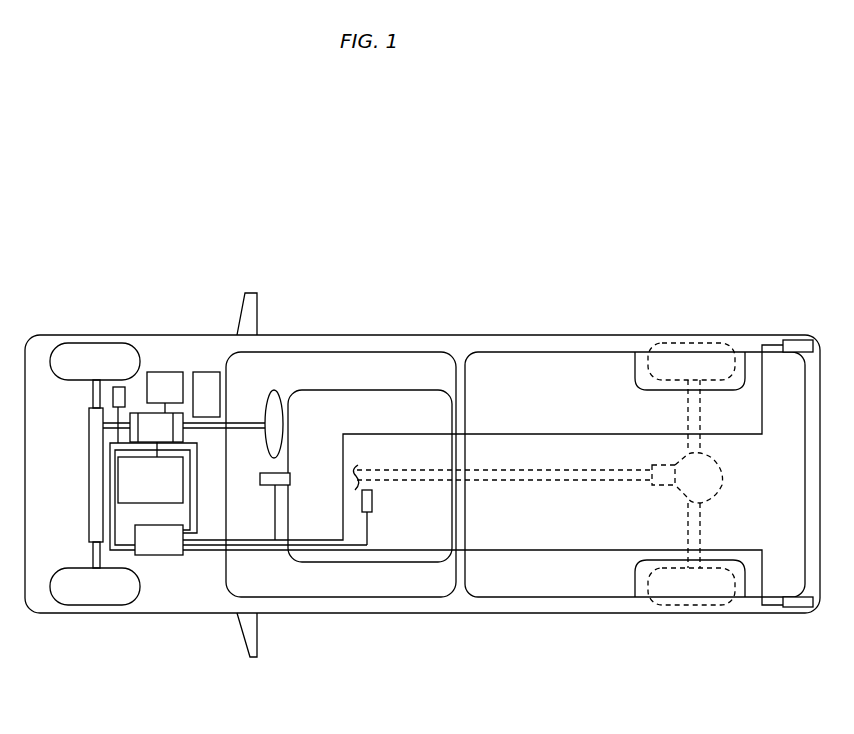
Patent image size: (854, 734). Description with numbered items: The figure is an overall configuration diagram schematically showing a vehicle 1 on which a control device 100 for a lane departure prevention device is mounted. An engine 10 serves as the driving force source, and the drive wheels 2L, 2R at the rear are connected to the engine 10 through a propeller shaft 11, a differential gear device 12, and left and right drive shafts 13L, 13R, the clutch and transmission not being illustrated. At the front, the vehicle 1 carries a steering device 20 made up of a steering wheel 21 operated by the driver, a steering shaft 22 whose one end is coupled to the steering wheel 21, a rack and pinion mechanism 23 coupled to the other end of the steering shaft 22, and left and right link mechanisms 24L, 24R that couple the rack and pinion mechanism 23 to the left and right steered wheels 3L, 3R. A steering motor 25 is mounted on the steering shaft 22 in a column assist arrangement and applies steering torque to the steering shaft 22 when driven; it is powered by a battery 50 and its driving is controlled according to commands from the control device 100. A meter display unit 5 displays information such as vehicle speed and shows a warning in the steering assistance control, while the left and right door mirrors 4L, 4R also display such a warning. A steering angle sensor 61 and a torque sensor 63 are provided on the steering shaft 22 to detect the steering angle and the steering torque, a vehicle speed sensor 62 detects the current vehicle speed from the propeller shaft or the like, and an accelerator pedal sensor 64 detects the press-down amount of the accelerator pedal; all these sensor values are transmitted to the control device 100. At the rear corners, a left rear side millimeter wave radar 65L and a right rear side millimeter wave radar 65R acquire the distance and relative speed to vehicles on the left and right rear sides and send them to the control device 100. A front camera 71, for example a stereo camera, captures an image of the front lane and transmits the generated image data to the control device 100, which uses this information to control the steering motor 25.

The vehicle 1 is at (481, 299).
The drive wheel 2R is at (680, 343).
The drive wheel 2L is at (697, 612).
The steered wheel 3R is at (77, 343).
The steered wheel 3L is at (105, 605).
The door mirror 4R is at (243, 292).
The door mirror 4L is at (255, 658).
The meter display unit 5 is at (214, 404).
The engine 10 is at (162, 490).
The propeller shaft 11 is at (633, 487).
The differential gear device 12 is at (722, 470).
The drive shaft 13R is at (702, 422).
The drive shaft 13L is at (708, 533).
The steering device 20 is at (266, 376).
The steering wheel 21 is at (285, 417).
The steering shaft 22 is at (242, 420).
The rack and pinion mechanism 23 is at (89, 470).
The link mechanism 24R is at (93, 395).
The link mechanism 24L is at (93, 549).
The steering motor 25 is at (168, 439).
The battery 50 is at (177, 396).
The steering angle sensor 61 is at (183, 440).
The vehicle speed sensor 62 is at (373, 498).
The torque sensor 63 is at (130, 443).
The accelerator pedal sensor 64 is at (120, 387).
The right rear side millimeter wave radar 65R is at (786, 340).
The left rear side millimeter wave radar 65L is at (803, 607).
The front camera 71 is at (290, 478).
The control device 100 is at (176, 550).